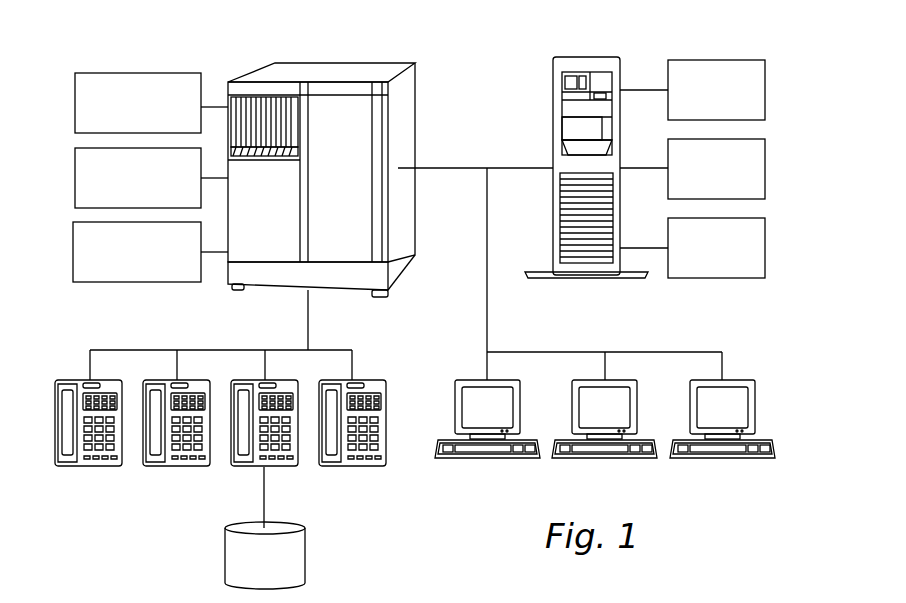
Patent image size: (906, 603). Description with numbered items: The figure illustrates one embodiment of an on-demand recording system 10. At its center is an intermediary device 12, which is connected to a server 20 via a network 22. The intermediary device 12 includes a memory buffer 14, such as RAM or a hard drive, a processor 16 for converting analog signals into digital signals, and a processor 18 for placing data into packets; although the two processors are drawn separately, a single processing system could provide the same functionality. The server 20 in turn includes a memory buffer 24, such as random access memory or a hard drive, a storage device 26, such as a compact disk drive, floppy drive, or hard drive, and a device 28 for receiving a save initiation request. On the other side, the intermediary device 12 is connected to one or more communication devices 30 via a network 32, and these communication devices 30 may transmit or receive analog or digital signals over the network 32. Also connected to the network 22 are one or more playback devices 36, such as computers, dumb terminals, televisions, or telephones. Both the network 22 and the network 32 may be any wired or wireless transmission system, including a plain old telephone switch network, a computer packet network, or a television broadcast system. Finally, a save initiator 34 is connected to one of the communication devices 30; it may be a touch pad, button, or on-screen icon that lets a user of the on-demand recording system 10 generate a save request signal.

The on-demand recording system 10 is at (501, 59).
The intermediary device 12 is at (349, 63).
The memory buffer 14 is at (139, 73).
The processor 16 is at (75, 173).
The processor 18 is at (138, 283).
The server 20 is at (588, 57).
The network 22 is at (487, 258).
The memory buffer 24 is at (765, 90).
The storage device 26 is at (765, 168).
The device for receiving a save initiation request 28 is at (765, 248).
The communication devices 30 is at (87, 467).
The network 32 is at (307, 317).
The save initiator 34 is at (225, 556).
The playback devices 36 is at (487, 459).